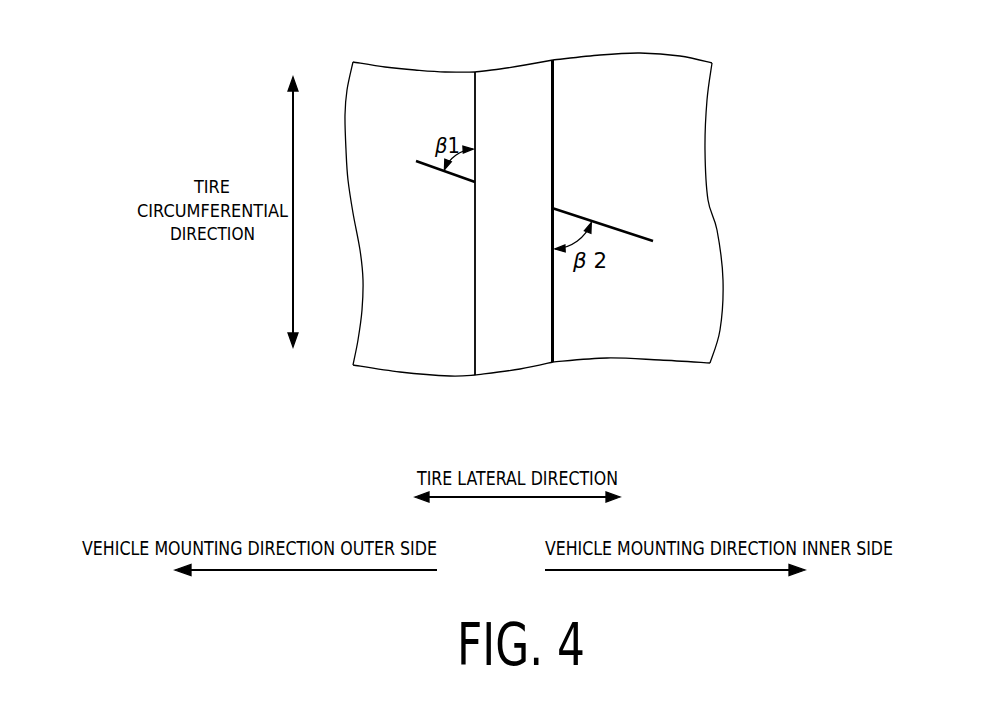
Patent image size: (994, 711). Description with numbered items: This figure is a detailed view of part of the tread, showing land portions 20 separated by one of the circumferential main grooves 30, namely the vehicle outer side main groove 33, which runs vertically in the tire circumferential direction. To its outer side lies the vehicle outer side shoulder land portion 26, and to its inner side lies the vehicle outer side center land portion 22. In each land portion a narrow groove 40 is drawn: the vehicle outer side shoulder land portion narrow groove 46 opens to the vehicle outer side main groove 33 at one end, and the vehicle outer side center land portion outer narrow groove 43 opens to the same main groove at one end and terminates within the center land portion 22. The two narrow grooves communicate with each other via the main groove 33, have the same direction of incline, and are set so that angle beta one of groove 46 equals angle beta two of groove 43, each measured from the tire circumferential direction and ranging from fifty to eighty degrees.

The land portion 20 is at (534, 240).
The vehicle outer side center land portion 22 is at (625, 335).
The vehicle outer side shoulder land portion 26 is at (400, 337).
The main groove 30 is at (567, 188).
The vehicle outer side main groove 33 is at (512, 87).
The vehicle outer side center land portion outer narrow groove 43 is at (572, 212).
The narrow groove 40 is at (420, 91).
The vehicle outer side shoulder land portion narrow groove 46 is at (433, 163).